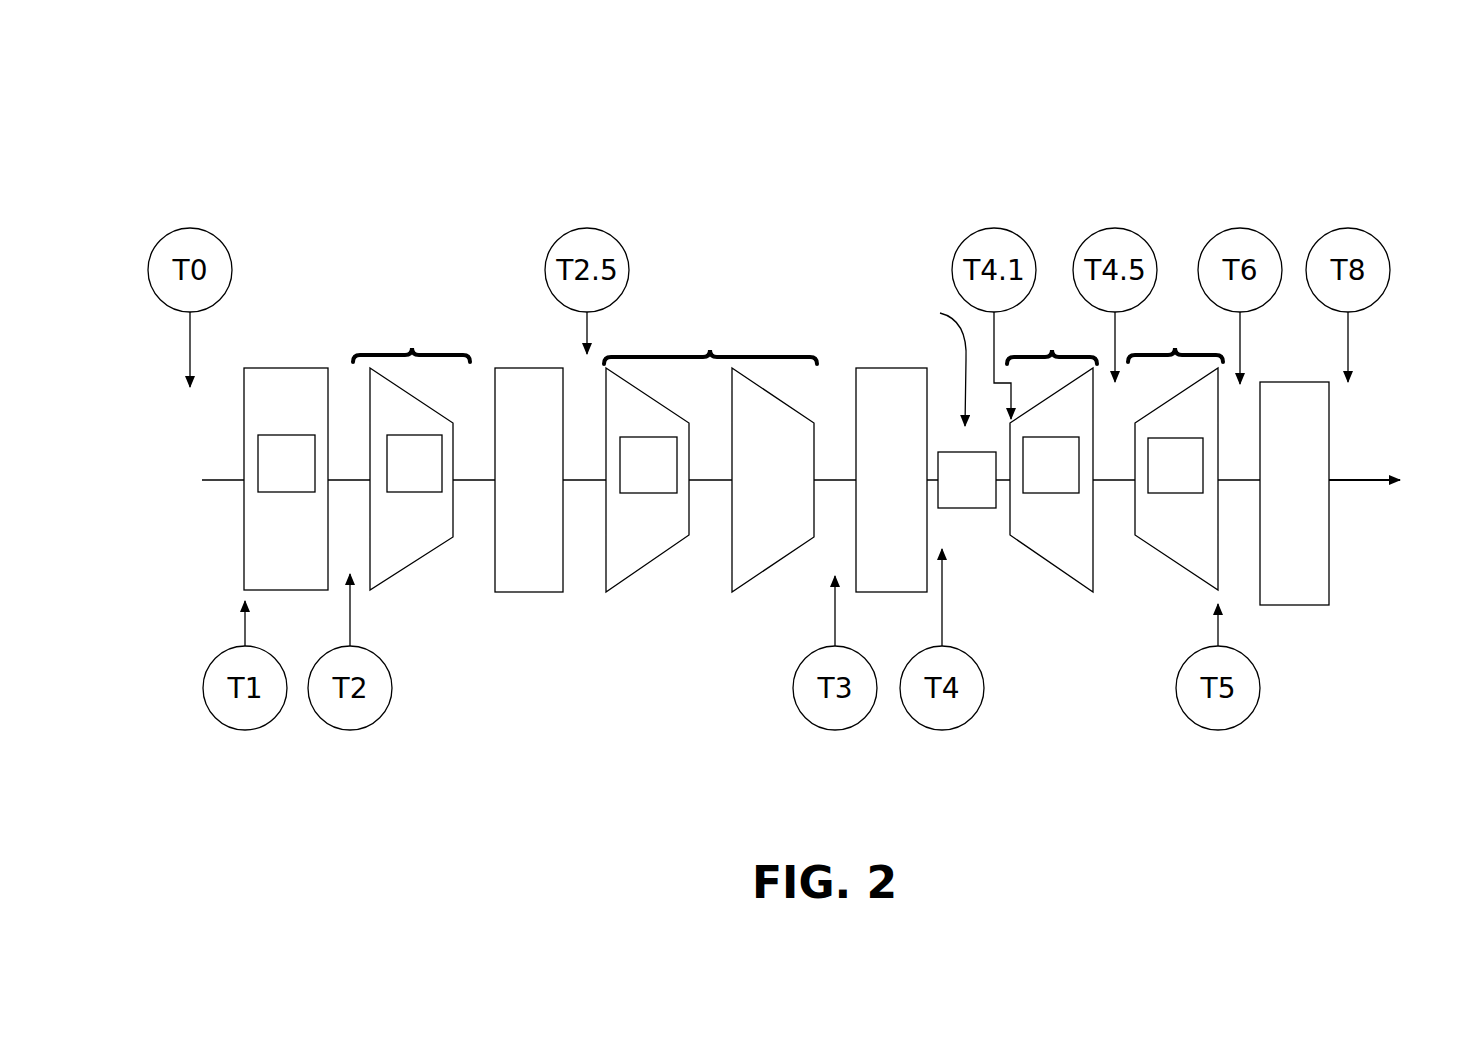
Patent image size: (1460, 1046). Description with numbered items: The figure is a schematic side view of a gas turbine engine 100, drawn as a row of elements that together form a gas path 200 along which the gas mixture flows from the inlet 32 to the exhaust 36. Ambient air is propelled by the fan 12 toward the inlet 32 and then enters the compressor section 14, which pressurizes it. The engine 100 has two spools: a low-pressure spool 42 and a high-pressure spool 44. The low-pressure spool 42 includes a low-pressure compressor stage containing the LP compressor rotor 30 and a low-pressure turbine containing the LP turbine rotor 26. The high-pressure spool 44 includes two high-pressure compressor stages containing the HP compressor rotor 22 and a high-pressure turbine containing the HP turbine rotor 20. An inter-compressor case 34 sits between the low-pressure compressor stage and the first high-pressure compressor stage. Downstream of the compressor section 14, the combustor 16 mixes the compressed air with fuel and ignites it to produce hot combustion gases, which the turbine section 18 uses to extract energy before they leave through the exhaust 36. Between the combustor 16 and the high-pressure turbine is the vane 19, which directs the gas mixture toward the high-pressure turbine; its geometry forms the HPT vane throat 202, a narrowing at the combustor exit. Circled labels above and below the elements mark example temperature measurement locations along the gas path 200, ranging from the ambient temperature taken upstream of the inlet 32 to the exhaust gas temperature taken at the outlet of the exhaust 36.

The gas turbine engine 100 is at (192, 173).
The fan 12 is at (268, 483).
The inlet 32 is at (268, 567).
The compressor section 14 is at (774, 537).
The LP compressor rotor 30 is at (396, 483).
The inter-compressor case 34 is at (511, 497).
The HP compressor rotor 22 is at (630, 483).
The combustor 16 is at (873, 498).
The vane 19 is at (949, 498).
The HPT vane throat 202 is at (919, 362).
The turbine section 18 is at (1203, 537).
The HP turbine rotor 20 is at (1033, 483).
The LP turbine rotor 26 is at (1157, 483).
The exhaust 36 is at (1277, 512).
The low-pressure spool 42 is at (788, 336).
The high-pressure spool 44 is at (850, 337).
The gas path 200 is at (1454, 455).